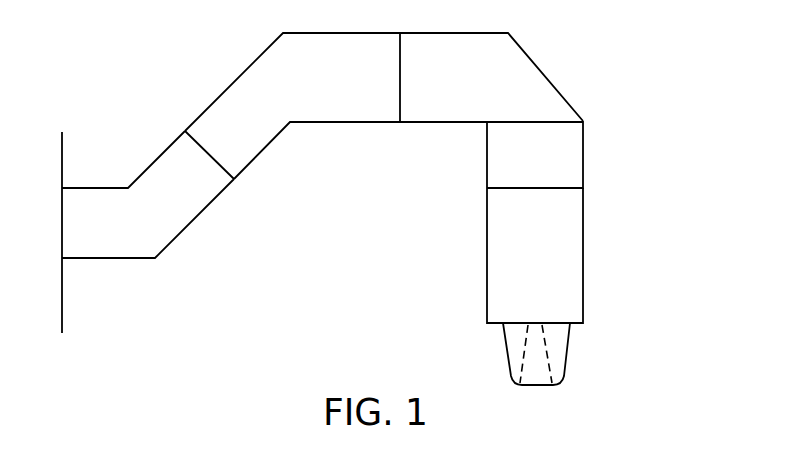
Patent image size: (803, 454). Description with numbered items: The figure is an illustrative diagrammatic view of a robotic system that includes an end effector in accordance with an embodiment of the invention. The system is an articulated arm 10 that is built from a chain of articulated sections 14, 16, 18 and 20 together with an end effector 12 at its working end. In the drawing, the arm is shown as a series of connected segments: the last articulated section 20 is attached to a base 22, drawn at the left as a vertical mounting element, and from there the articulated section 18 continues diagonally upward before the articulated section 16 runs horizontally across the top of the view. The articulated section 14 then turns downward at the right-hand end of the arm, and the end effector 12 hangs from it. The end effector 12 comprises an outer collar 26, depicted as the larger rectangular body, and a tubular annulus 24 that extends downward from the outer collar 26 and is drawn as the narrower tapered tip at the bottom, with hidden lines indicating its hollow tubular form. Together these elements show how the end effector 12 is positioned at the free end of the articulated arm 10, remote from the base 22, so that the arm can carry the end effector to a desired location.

The articulated arm 10 is at (656, 52).
The end effector 12 is at (636, 248).
The articulated section 14 is at (580, 152).
The articulated section 16 is at (459, 40).
The articulated section 18 is at (246, 75).
The articulated section 20 is at (150, 173).
The base 22 is at (62, 302).
The tubular annulus 24 is at (512, 351).
The outer collar 26 is at (495, 240).